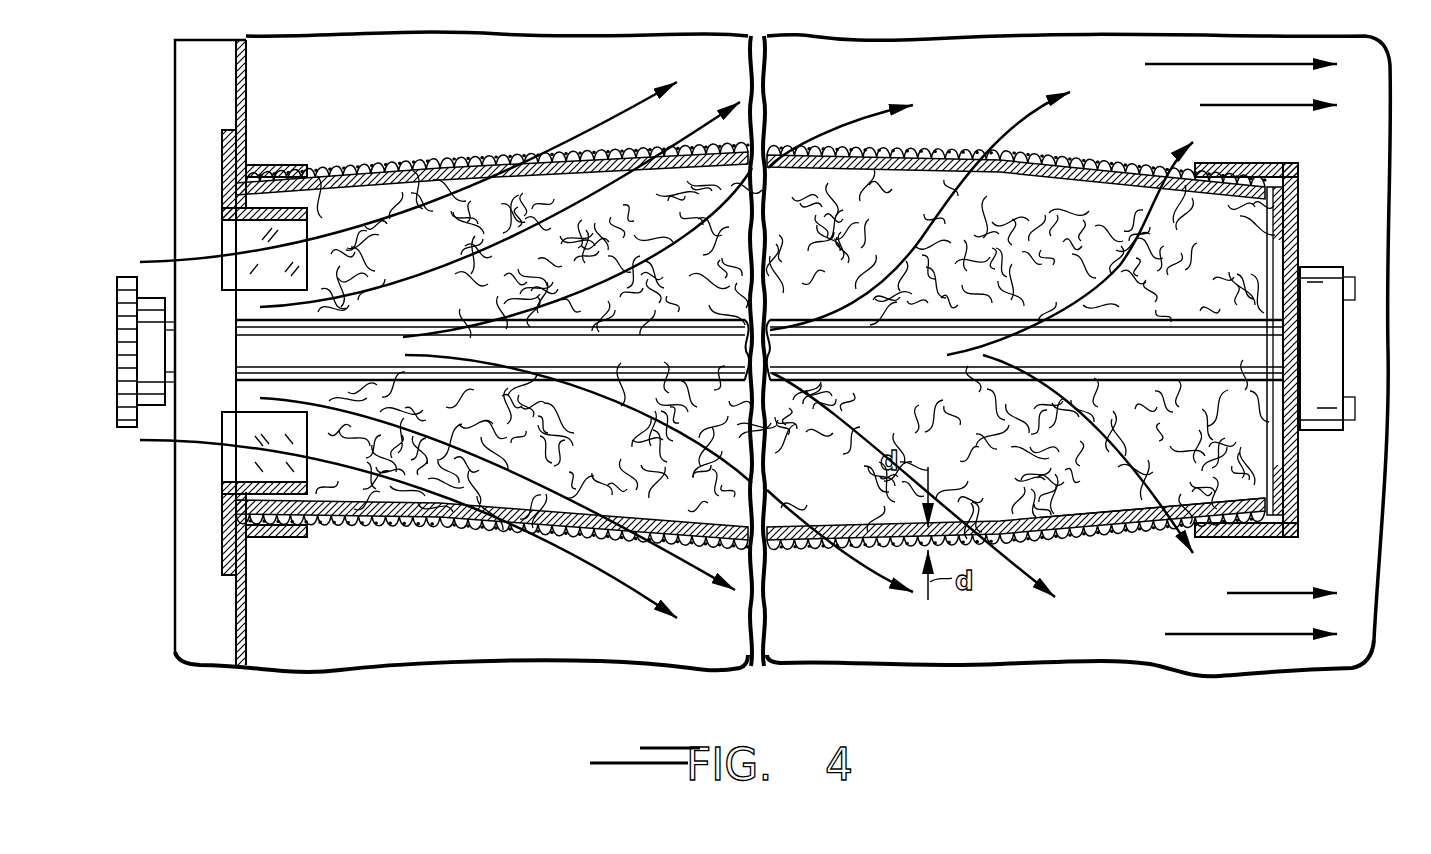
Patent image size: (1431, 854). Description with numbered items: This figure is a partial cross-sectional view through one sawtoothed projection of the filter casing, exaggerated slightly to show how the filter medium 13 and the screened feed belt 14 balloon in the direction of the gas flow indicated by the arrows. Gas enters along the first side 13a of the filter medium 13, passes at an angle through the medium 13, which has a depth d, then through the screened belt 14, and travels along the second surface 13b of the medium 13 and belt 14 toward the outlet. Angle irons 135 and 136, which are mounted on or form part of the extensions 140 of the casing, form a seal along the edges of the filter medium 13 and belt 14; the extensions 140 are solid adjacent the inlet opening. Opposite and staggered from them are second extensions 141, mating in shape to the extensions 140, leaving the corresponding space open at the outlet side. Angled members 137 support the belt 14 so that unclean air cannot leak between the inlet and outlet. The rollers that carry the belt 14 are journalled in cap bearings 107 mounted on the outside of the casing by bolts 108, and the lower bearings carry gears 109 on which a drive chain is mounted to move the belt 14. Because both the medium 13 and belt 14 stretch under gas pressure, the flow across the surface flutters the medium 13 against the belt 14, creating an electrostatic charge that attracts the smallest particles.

The extensions 140 is at (236, 95).
The angle iron 135 is at (222, 175).
The angle iron 136 is at (282, 165).
The gears 109 is at (117, 415).
The screened feed belt 14 is at (1040, 155).
The filter medium 13 is at (1100, 172).
The first side 13a is at (1088, 512).
The second surface 13b is at (1160, 535).
The angled members 137 is at (1228, 163).
The second extensions 141 is at (1292, 233).
The bolts 108 is at (1343, 278).
The cap bearings 107 is at (1323, 352).